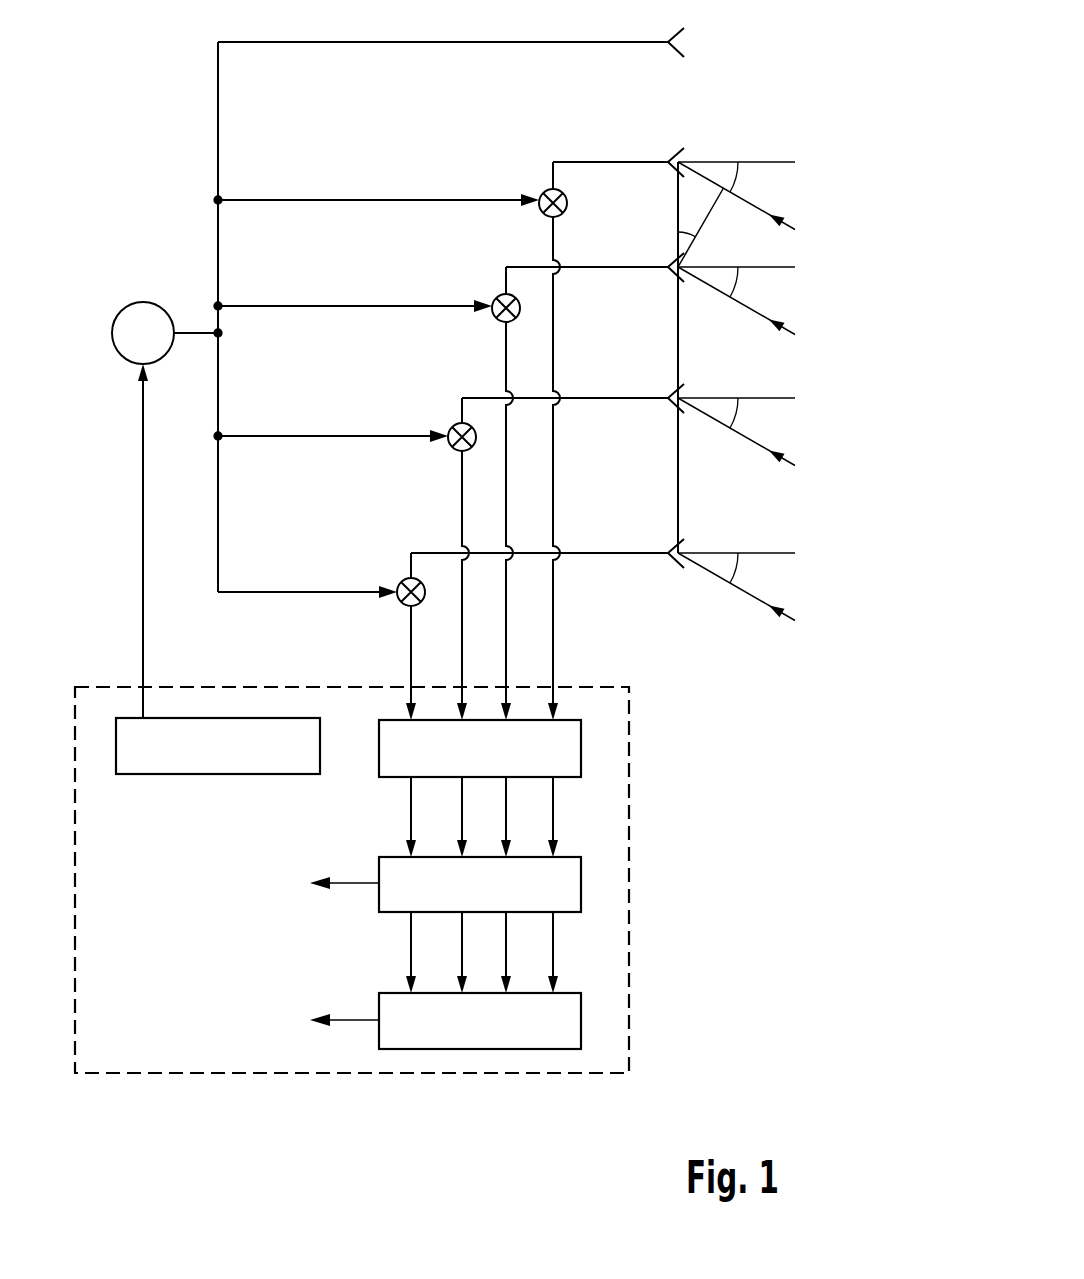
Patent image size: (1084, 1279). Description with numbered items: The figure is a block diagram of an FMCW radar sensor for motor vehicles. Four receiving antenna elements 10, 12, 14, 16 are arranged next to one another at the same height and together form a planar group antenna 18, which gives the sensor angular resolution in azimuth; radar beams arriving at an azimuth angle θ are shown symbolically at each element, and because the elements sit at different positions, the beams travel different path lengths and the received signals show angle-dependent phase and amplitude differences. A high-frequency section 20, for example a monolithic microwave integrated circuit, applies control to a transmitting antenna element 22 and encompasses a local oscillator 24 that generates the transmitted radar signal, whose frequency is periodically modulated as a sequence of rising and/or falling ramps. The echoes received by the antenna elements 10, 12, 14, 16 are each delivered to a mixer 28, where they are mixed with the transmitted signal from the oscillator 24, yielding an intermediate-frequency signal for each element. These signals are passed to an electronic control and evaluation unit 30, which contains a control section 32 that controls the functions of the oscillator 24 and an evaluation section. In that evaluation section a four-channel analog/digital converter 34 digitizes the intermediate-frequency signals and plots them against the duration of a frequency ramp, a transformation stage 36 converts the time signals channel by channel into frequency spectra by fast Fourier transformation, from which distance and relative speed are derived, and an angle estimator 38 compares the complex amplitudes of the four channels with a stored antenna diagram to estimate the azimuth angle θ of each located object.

The receiving antenna element 10 is at (672, 156).
The receiving antenna element 12 is at (672, 261).
The receiving antenna element 14 is at (672, 393).
The receiving antenna element 16 is at (672, 548).
The planar group antenna 18 is at (678, 132).
The high-frequency section 20 is at (150, 164).
The transmitting antenna element 22 is at (672, 36).
The local oscillator 24 is at (145, 302).
The mixer 28 is at (542, 213).
The control and evaluation unit 30 is at (630, 822).
The control section 32 is at (218, 775).
The analog/digital converter 34 is at (581, 747).
The transformation stage 36 is at (581, 893).
The angle estimator 38 is at (581, 1027).